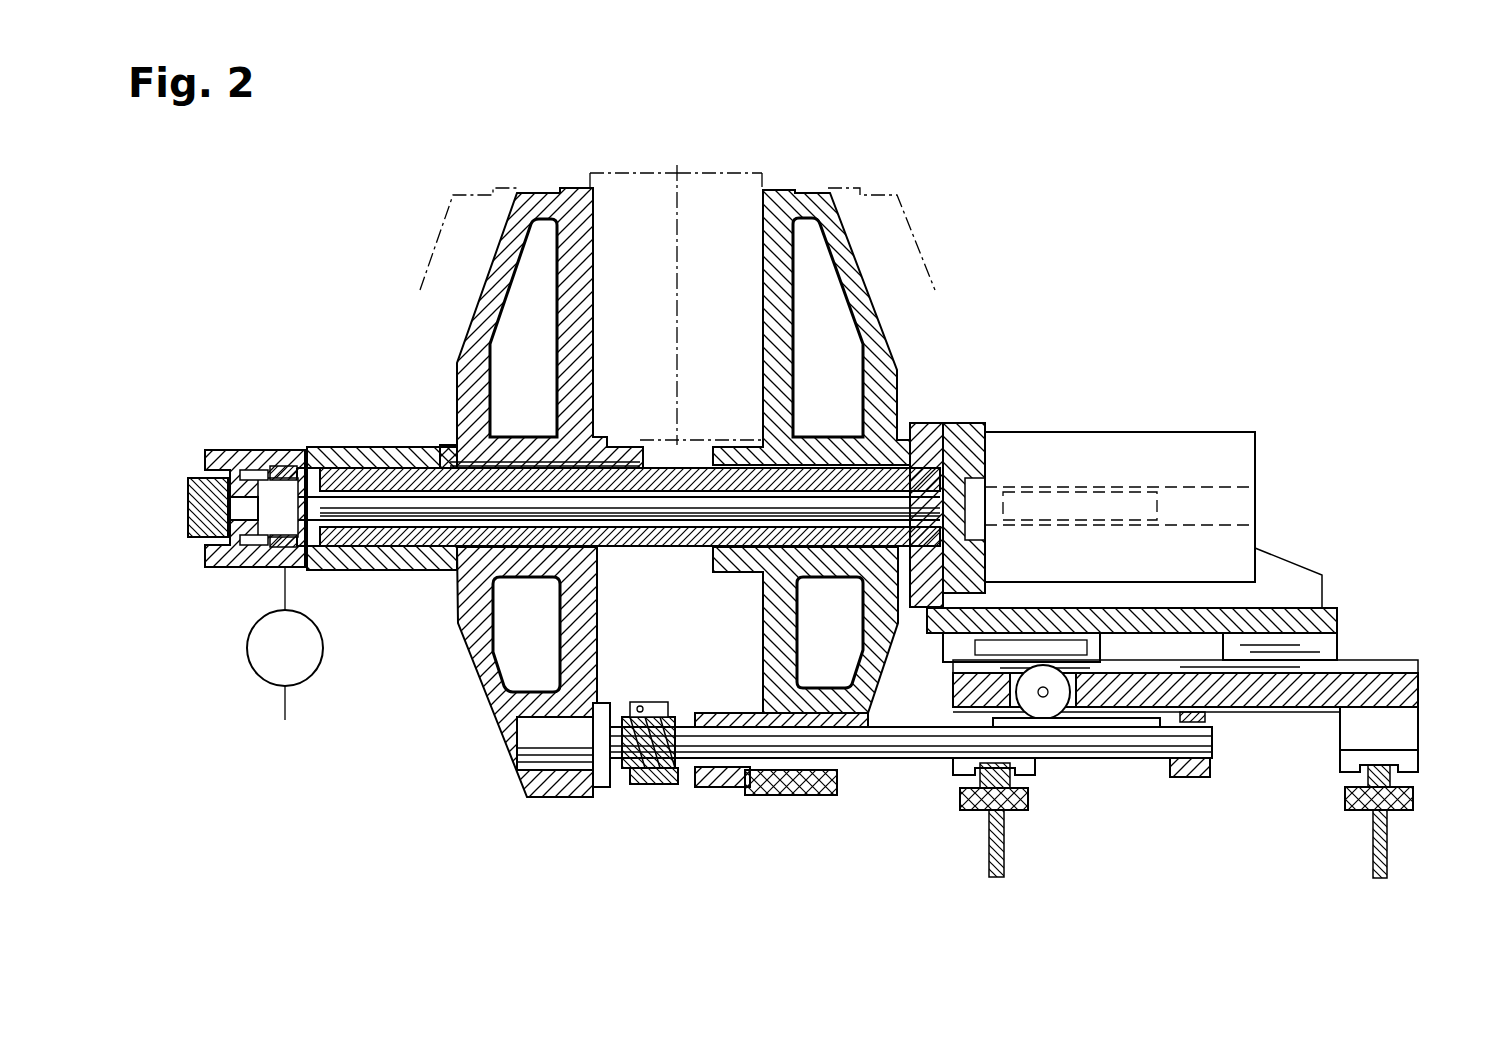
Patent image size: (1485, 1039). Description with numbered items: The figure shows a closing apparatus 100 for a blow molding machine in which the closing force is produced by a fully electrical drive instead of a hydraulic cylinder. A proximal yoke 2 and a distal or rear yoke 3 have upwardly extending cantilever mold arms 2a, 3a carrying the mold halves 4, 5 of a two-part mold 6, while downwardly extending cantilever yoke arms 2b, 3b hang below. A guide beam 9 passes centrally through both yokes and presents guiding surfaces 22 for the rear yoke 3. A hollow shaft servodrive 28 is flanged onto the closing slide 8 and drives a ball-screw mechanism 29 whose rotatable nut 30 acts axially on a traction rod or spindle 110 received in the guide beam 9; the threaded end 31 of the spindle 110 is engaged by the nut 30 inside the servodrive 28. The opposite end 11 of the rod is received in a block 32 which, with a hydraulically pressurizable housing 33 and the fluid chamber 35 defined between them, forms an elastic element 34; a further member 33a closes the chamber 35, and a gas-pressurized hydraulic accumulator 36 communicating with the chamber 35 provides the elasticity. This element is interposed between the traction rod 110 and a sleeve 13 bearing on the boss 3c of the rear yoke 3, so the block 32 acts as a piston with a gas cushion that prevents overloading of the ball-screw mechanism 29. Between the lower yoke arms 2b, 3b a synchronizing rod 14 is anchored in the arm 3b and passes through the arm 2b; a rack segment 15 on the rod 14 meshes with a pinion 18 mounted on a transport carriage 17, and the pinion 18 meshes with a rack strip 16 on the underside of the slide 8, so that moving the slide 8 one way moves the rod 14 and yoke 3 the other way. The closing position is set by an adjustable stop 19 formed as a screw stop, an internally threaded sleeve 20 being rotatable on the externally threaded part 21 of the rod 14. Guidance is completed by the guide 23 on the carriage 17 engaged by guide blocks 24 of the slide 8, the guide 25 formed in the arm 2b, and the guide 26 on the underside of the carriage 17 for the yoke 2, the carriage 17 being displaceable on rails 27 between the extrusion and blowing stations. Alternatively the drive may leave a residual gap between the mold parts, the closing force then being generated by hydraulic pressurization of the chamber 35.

The injection molding machine 100 is at (828, 130).
The proximal yoke 2 is at (827, 451).
The upwardly extending cantilever mold arm 2a is at (762, 268).
The downwardly-extending cantilever yoke arm 2b is at (762, 632).
The distal or rear yoke 3 is at (528, 492).
The upwardly extending cantilever mold arm 3a is at (595, 362).
The downwardly-extending cantilever yoke arm 3b is at (598, 632).
The boss 3c is at (465, 602).
The mold half 4 is at (735, 186).
The mold half 5 is at (618, 186).
The two-part mold 6 is at (690, 152).
The closing slide 8 is at (927, 440).
The guide beam 9 is at (425, 446).
The rod end 11 is at (240, 560).
The sleeve 13 is at (345, 448).
The synchronizing rod 14 is at (612, 790).
The rack segment 15 is at (1125, 722).
The rack strip 16 is at (1090, 672).
The transport carriage 17 is at (1405, 692).
The pinion 18 is at (1058, 702).
The adjustable stop 19 is at (652, 778).
The nut 20 is at (673, 786).
The externally threaded part 21 is at (648, 716).
The guiding surfaces 22 is at (600, 468).
The guide 23 is at (1405, 666).
The guide blocks 24 is at (952, 655).
The guide 25 is at (800, 795).
The guide 26 is at (1192, 778).
The rails 27 is at (1010, 812).
The hollow shaft servodrive 28 is at (1175, 450).
The ball-screw mechanism 29 is at (995, 466).
The rotatable nut 30 is at (968, 436).
The threaded end 31 is at (1100, 525).
The block 32 is at (188, 496).
The hydraulically pressurizable housing 33 is at (215, 452).
The further member 33a is at (290, 458).
The adjusting unit 34 is at (240, 519).
The fluid chamber 35 is at (258, 458).
The gas-pressurized hydraulic accumulator 36 is at (316, 660).
The traction rod or spindle 110 is at (418, 522).